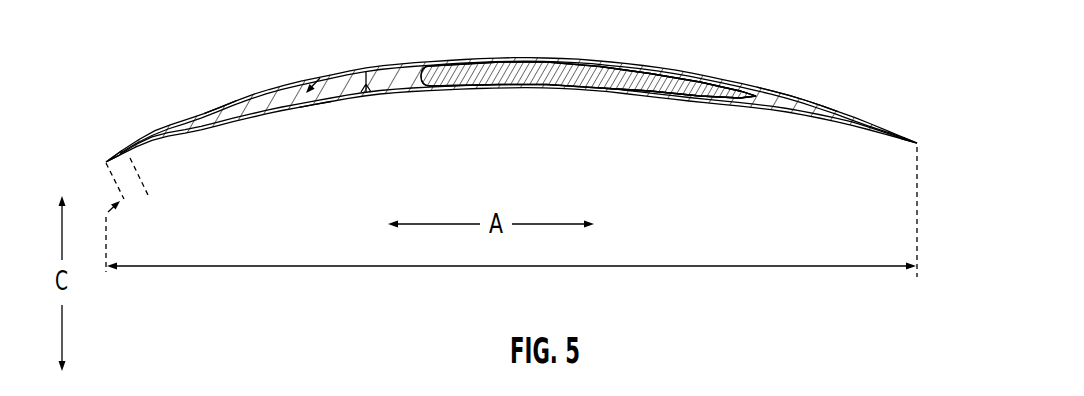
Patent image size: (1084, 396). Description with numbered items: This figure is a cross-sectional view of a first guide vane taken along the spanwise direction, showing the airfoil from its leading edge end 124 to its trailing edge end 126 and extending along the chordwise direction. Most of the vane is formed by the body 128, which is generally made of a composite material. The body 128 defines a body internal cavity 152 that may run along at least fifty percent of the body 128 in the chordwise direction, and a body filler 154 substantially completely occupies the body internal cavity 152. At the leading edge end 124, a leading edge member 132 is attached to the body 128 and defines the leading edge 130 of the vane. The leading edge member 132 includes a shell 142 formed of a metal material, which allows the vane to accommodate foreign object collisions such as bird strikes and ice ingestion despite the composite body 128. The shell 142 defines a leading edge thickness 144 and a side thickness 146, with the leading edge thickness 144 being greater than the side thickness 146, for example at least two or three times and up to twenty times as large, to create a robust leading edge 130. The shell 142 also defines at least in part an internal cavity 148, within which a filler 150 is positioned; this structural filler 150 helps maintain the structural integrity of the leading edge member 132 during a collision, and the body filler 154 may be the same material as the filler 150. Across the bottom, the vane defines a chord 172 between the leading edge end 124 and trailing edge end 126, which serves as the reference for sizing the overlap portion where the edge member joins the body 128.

The leading edge end 124 is at (104, 109).
The trailing edge end 126 is at (936, 142).
The body 128 is at (770, 96).
The leading edge 130 is at (90, 164).
The leading edge member 132 is at (223, 66).
The shell 142 is at (287, 82).
The leading edge thickness 144 is at (156, 188).
The side thickness 146 is at (311, 118).
The internal cavity 148 is at (266, 118).
The filler 150 is at (347, 76).
The body internal cavity 152 is at (544, 57).
The body filler 154 is at (622, 77).
The chord 172 is at (520, 266).